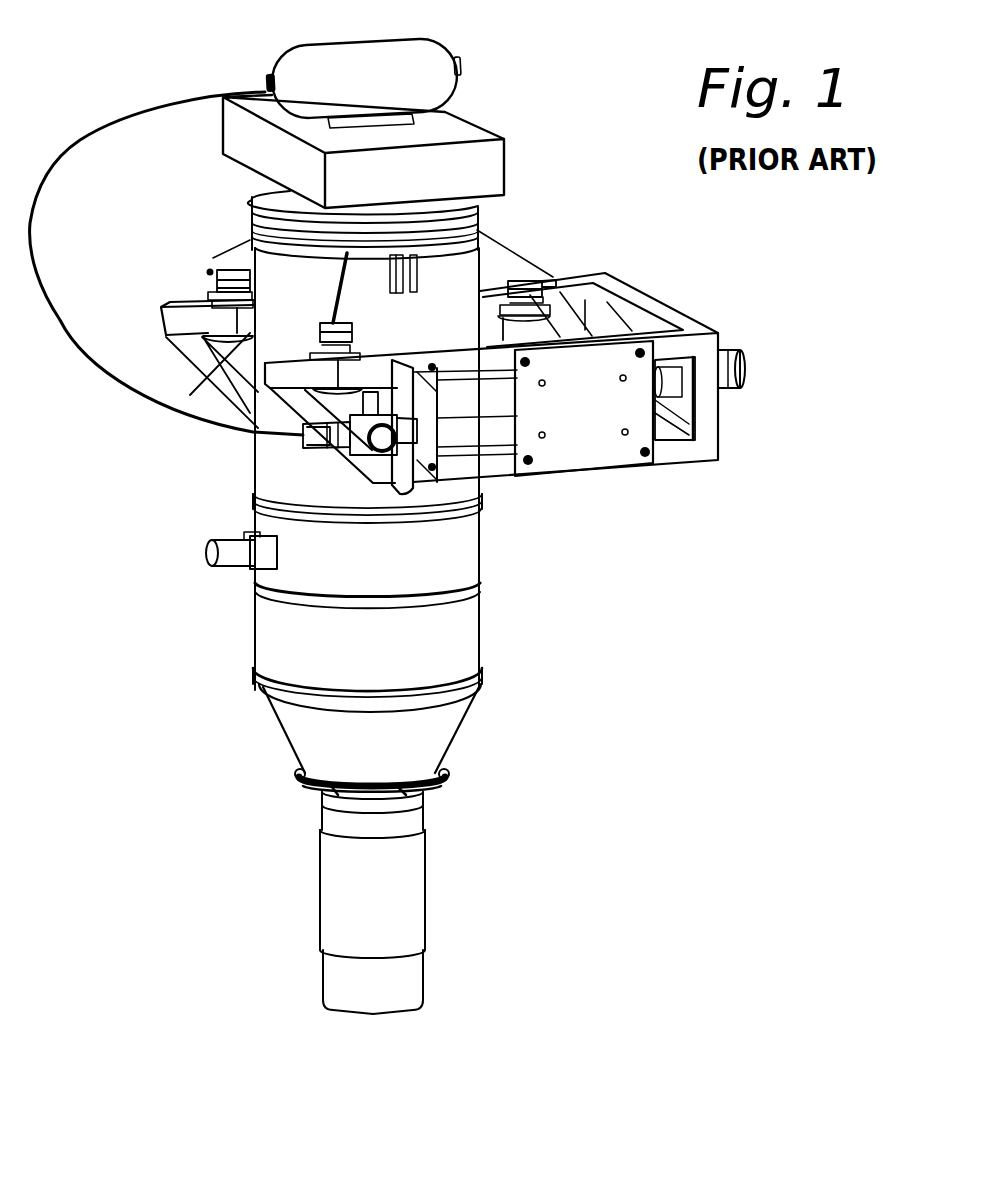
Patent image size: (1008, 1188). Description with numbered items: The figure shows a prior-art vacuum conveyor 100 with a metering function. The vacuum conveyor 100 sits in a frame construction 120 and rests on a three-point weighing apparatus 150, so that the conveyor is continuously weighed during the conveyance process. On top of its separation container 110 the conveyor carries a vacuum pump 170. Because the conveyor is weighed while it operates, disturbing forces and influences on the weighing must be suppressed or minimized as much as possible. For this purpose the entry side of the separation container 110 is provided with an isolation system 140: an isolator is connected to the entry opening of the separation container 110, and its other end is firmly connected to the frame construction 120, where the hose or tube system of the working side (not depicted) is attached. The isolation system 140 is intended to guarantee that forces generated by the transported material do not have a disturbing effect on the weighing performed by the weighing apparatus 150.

The vacuum conveyor 100 is at (735, 223).
The separation container 110 is at (480, 624).
The frame construction 120 is at (673, 458).
The isolation system 140 is at (688, 410).
The 3-point weighing apparatus 150 is at (213, 252).
The vacuum pump 170 is at (404, 94).